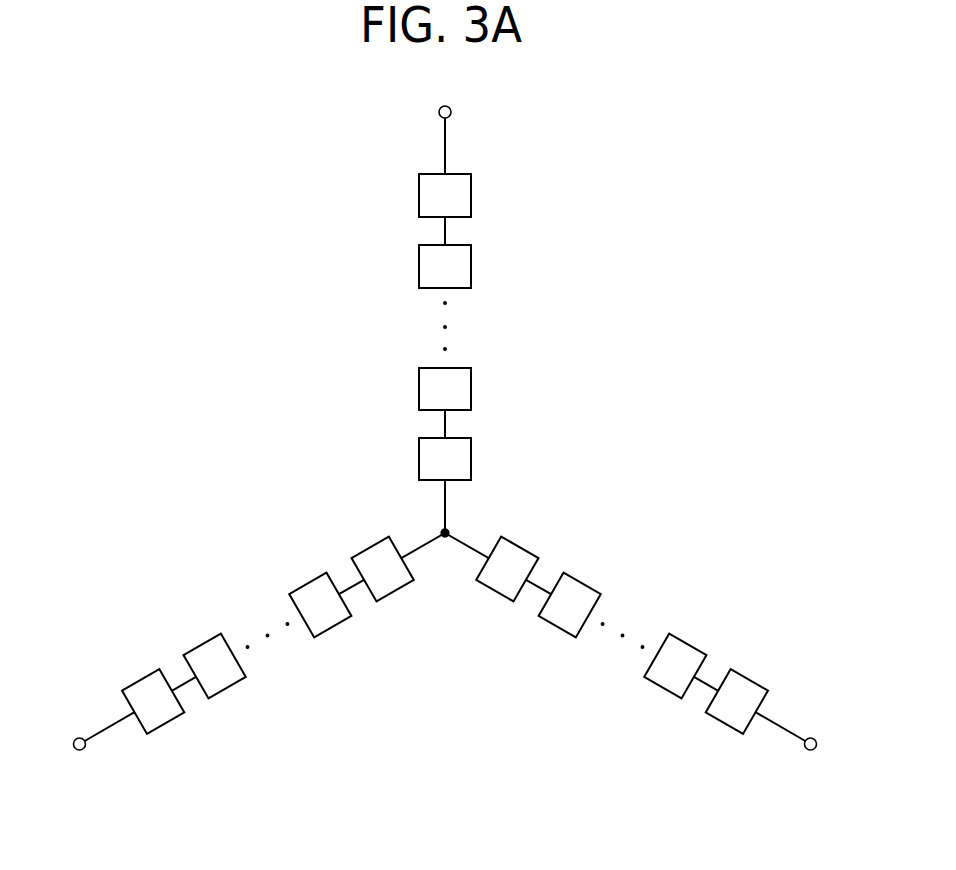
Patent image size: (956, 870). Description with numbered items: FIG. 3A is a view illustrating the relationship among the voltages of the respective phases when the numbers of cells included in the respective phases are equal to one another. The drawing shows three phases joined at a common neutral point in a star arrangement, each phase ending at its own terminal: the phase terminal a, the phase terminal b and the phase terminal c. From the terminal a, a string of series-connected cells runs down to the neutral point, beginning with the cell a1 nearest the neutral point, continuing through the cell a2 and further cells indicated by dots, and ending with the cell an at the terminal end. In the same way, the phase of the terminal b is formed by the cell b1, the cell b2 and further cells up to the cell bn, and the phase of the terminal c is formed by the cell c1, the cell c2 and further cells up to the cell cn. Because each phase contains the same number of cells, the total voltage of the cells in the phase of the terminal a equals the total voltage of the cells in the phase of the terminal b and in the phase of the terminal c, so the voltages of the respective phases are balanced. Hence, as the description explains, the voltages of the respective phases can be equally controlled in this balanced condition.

The terminal a is at (445, 122).
The terminal b is at (797, 736).
The terminal c is at (96, 736).
The series element a1 is at (471, 460).
The series element a2 is at (471, 389).
The series element an is at (471, 195).
The series element b1 is at (525, 550).
The series element b2 is at (583, 584).
The series element bn is at (753, 682).
The series element c1 is at (364, 550).
The series element c2 is at (303, 586).
The series element cn is at (140, 680).